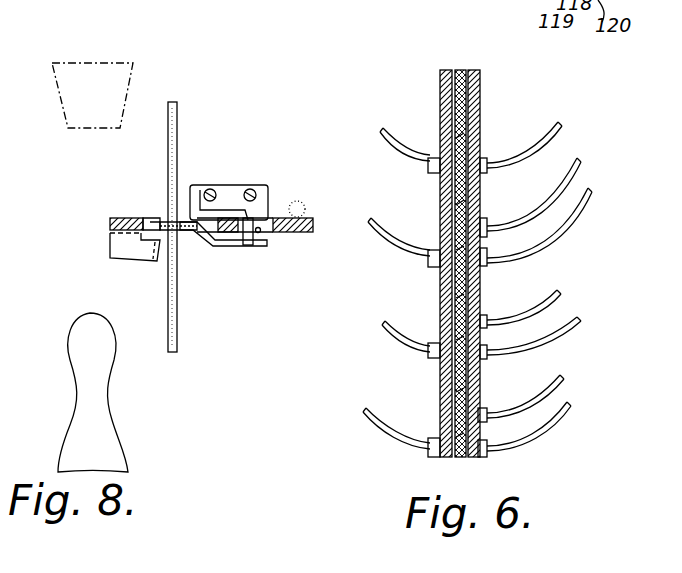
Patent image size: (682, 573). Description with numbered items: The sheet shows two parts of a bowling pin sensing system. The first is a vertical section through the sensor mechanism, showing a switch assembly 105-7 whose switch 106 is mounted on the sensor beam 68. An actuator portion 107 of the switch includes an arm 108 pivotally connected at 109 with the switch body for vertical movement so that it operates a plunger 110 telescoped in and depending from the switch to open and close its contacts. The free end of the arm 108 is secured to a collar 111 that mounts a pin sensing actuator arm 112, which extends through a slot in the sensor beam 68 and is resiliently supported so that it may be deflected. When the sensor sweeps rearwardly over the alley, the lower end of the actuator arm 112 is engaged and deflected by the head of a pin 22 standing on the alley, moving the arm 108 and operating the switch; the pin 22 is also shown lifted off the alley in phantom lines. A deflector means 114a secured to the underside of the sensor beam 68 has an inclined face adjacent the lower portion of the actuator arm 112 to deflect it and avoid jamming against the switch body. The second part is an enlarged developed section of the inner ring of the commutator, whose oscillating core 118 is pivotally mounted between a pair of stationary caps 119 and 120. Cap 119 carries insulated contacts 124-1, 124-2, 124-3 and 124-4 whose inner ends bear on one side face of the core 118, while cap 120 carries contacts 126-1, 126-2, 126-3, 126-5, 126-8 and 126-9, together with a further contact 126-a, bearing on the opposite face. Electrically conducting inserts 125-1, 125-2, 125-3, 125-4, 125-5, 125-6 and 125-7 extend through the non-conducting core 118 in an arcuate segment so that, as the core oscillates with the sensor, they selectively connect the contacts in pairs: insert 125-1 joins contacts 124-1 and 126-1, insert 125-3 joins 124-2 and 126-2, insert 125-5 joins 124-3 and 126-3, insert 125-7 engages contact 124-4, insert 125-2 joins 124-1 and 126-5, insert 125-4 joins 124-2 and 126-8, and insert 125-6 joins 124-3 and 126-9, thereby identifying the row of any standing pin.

In FIG. 8, the pin 22 is at (136, 81).
In FIG. 8, the pin sensing actuator arm 112 is at (176, 122).
In FIG. 8, the switch 106 is at (258, 185).
In FIG. 8, the switch assembly 105-7 is at (205, 179).
In FIG. 8, the sensor beam 68 is at (310, 218).
In FIG. 8, the deflector means 114a is at (133, 258).
In FIG. 8, the collar 111 is at (187, 238).
In FIG. 8, the actuator portion 107 is at (213, 243).
In FIG. 8, the arm 108 is at (230, 240).
In FIG. 8, the plunger 110 is at (255, 250).
In FIG. 8, the pivotal connection 109 is at (263, 237).
In FIG. 6, the stationary cap 119 is at (446, 70).
In FIG. 6, the oscillating core 118 is at (460, 70).
In FIG. 6, the commutator cap 120 is at (475, 86).
In FIG. 6, the contact 124-1 is at (430, 455).
In FIG. 6, the contact 124-2 is at (428, 357).
In FIG. 6, the contact 124-3 is at (428, 265).
In FIG. 6, the contact 124-4 is at (428, 170).
In FIG. 6, the contact 126-1 is at (487, 455).
In FIG. 6, the contact 126-2 is at (520, 357).
In FIG. 6, the contact 126-3 is at (550, 262).
In FIG. 6, the contact 126-5 is at (487, 412).
In FIG. 6, the contact 126-8 is at (487, 318).
In FIG. 6, the contact 126-9 is at (487, 224).
In FIG. 6, the right arm and clamp 126-a is at (495, 155).
In FIG. 6, the electrically conducting insert 125-1 is at (464, 433).
In FIG. 6, the electrically conducting insert 125-2 is at (464, 388).
In FIG. 6, the electrically conducting insert 125-3 is at (464, 336).
In FIG. 6, the electrically conducting insert 125-4 is at (464, 294).
In FIG. 6, the electrically conducting insert 125-5 is at (464, 246).
In FIG. 6, the electrically conducting insert 125-6 is at (464, 200).
In FIG. 6, the electrically conducting insert 125-7 is at (464, 133).